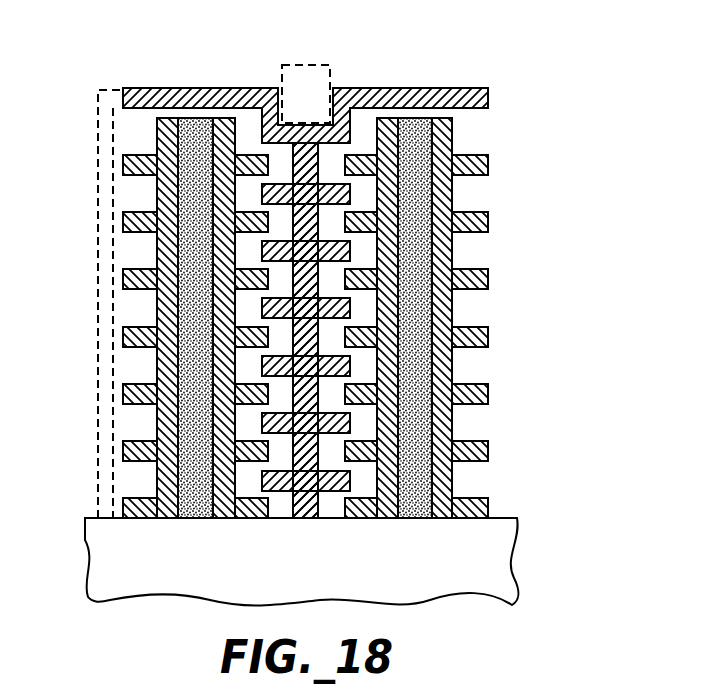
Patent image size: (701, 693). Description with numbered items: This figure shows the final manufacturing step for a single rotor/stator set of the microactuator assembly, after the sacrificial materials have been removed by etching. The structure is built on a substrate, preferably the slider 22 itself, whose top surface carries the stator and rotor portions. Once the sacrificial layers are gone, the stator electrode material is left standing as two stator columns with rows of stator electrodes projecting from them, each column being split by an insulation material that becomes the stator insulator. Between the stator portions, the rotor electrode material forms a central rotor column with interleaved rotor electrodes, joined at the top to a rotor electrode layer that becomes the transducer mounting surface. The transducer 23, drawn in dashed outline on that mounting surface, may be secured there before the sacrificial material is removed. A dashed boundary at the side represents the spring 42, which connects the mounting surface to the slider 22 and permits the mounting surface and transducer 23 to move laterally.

The slider 22 is at (517, 577).
The transducer 23 is at (310, 64).
The spring 42 is at (108, 193).